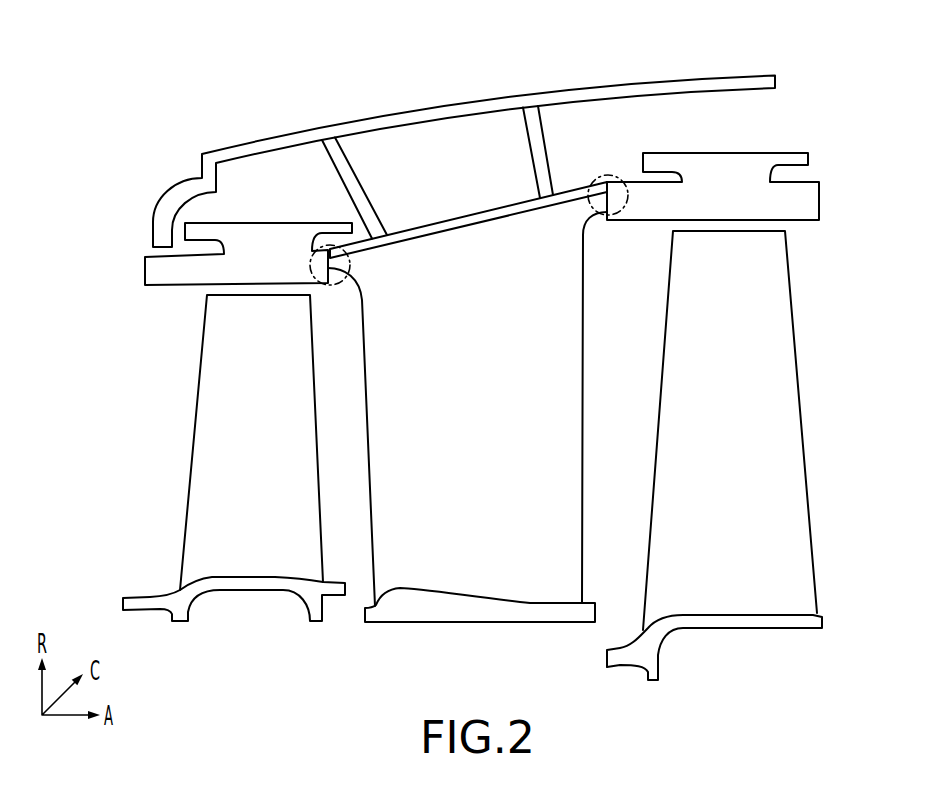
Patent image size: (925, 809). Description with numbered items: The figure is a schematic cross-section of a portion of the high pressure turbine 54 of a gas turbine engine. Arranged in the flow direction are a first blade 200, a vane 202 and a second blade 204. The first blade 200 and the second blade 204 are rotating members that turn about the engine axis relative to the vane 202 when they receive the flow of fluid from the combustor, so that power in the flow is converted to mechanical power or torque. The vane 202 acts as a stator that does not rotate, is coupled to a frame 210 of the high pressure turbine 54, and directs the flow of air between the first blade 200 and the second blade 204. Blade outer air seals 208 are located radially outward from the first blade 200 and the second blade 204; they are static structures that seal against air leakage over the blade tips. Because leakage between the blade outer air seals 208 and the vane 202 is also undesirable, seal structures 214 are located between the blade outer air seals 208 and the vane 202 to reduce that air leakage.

The high pressure turbine 54 is at (138, 117).
The first blade 200 is at (265, 407).
The vane 202 is at (505, 372).
The second blade 204 is at (760, 392).
The blade outer air seal 208 is at (170, 272).
The frame 210 is at (459, 103).
The seal structure 214 is at (322, 248).